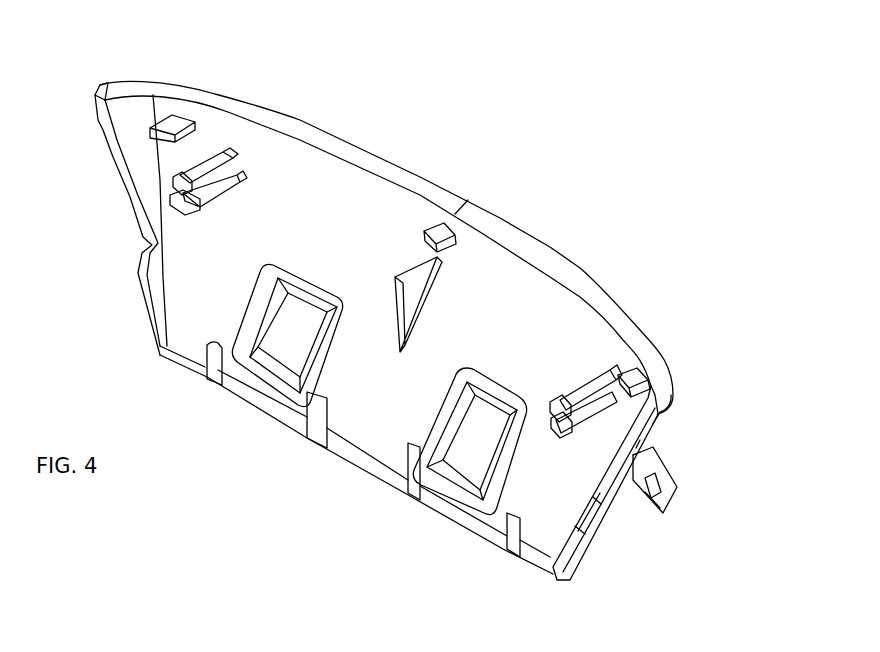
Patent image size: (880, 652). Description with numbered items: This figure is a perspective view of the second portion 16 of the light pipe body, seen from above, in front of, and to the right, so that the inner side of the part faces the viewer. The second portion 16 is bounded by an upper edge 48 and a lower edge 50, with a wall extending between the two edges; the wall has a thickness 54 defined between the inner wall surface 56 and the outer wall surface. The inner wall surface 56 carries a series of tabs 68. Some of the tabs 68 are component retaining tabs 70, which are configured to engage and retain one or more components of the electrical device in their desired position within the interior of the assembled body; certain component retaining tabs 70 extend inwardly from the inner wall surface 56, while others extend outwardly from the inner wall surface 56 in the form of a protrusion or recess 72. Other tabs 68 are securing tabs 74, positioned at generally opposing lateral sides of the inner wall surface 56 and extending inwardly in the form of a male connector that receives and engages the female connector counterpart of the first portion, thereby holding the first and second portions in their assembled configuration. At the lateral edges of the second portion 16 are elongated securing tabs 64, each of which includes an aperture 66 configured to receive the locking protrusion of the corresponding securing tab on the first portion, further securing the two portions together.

The second portion 16 is at (564, 104).
The upper edge 48 is at (327, 130).
The lower edge 50 is at (390, 489).
The thickness 54 is at (586, 528).
The inner wall surface 56 is at (541, 331).
The securing tabs 64 is at (653, 517).
The aperture 66 is at (650, 477).
The tabs 68 is at (405, 223).
The component retaining tab 70 is at (453, 240).
The protrusion or recess 72 is at (493, 443).
The securing tab 74 is at (227, 165).